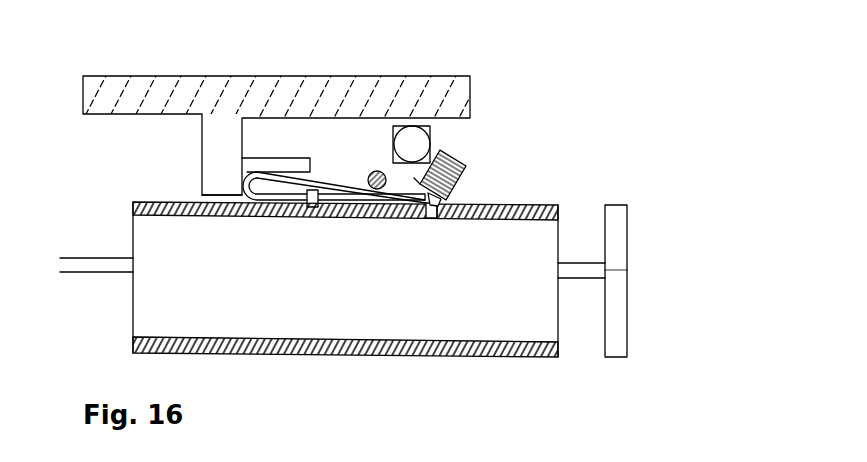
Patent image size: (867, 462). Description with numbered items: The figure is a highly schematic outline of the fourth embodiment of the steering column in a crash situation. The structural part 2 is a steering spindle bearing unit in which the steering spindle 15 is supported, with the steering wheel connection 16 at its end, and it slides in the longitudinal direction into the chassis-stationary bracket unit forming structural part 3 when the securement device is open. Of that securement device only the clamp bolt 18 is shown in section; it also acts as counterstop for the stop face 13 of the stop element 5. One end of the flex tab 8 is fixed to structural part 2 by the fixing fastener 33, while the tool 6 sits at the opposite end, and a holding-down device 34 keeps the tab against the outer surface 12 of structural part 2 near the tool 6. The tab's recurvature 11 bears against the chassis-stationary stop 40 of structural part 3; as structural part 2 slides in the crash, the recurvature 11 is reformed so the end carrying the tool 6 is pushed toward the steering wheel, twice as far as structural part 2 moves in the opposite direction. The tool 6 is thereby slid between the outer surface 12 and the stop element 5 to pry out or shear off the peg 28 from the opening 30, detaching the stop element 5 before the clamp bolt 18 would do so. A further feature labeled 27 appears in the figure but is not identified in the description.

The structural part 2 is at (502, 358).
The structural part 3 is at (130, 92).
The stop element 5 is at (468, 165).
The tool 6 is at (428, 208).
The flex tab 8 is at (288, 170).
The recurvature 11 is at (245, 194).
The outer surface 12 is at (150, 338).
The stop face 13 is at (430, 128).
The steering spindle 15 is at (588, 270).
The steering wheel connection 16 is at (605, 262).
The clamp bolt 18 is at (414, 142).
The contact point 27 is at (420, 184).
The peg 28 is at (447, 203).
The opening 30 is at (438, 212).
The fixing fastener 33 is at (311, 212).
The holding-down device 34 is at (371, 173).
The stop 40 is at (236, 188).